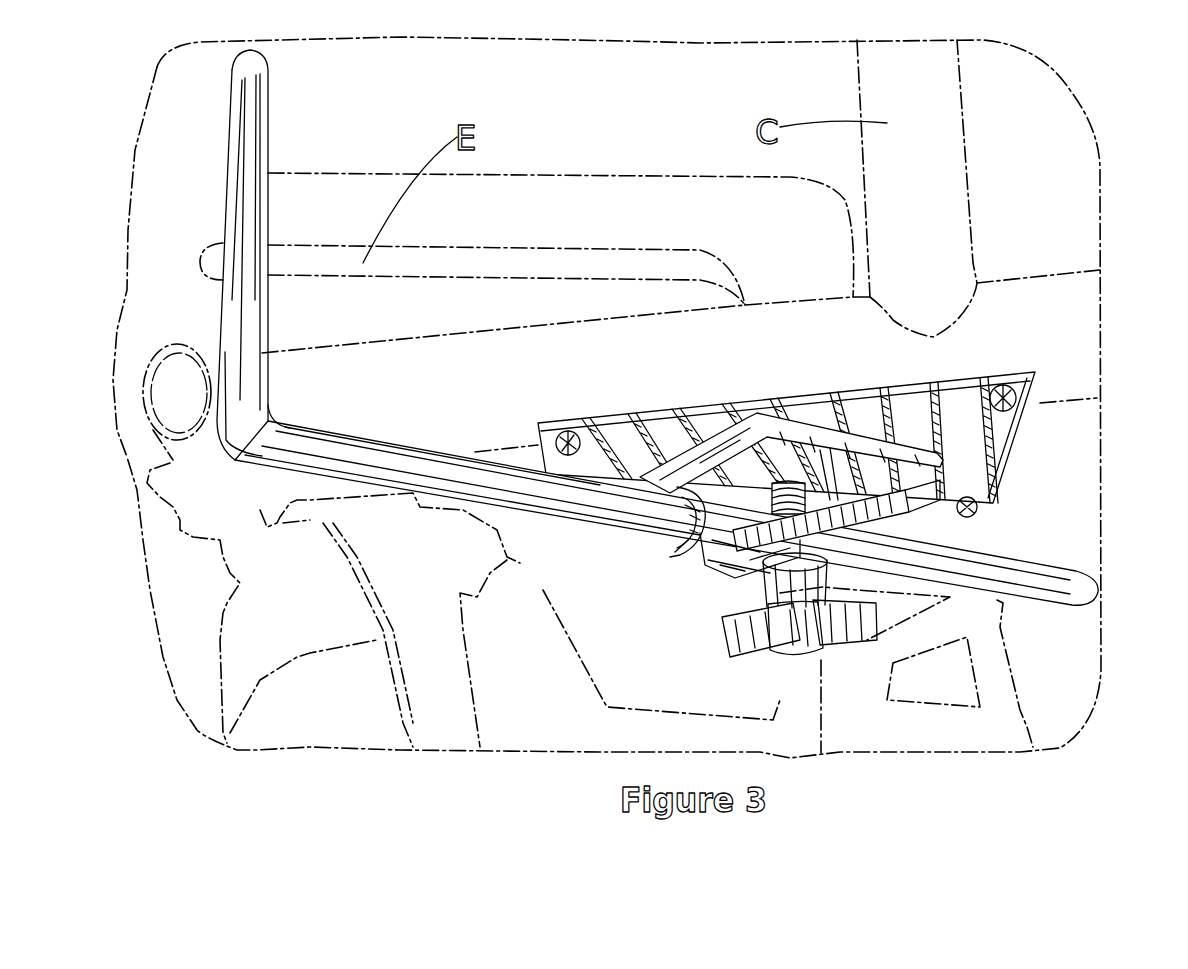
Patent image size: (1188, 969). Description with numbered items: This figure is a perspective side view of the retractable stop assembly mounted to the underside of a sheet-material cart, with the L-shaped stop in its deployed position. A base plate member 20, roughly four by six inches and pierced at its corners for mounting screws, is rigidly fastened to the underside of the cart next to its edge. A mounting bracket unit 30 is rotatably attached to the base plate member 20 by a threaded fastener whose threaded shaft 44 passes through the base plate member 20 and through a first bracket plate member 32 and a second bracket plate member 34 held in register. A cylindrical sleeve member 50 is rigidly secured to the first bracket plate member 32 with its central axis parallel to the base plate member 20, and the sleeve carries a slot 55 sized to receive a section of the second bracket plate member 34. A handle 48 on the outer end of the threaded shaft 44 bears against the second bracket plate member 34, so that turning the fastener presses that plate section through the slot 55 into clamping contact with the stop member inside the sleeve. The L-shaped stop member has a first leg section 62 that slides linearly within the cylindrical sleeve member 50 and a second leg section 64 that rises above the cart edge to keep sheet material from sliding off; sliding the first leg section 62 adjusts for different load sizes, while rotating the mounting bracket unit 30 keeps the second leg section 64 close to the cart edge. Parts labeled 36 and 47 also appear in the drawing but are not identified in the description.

The base plate member 20 is at (920, 407).
The mounting bracket unit 30 is at (947, 528).
The first bracket plate member 32 is at (793, 430).
The second bracket plate member 34 is at (852, 500).
The fastener 36 is at (897, 500).
The threaded shaft 44 is at (770, 487).
The boss 47 is at (747, 580).
The handle 48 is at (737, 640).
The cylindrical sleeve member 50 is at (700, 520).
The slot 55 is at (760, 553).
The first leg section 62 is at (553, 495).
The second leg section 64 is at (243, 203).